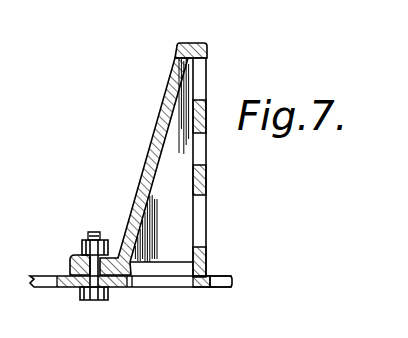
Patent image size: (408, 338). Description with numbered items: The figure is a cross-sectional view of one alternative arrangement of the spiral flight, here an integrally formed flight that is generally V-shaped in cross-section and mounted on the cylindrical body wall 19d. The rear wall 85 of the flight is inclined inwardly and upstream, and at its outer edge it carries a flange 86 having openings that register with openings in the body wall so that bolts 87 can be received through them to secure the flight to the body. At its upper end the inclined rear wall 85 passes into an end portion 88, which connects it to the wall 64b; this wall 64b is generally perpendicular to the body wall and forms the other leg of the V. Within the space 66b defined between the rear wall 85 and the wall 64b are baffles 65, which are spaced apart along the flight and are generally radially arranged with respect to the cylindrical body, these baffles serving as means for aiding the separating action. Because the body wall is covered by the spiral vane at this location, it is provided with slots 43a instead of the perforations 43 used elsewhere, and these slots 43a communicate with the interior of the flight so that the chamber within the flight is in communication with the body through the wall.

The end portion 88 is at (191, 42).
The wall 65 is at (200, 83).
The wall 64b is at (210, 111).
The rear wall 85 is at (152, 158).
The cavity 66b is at (162, 192).
The flange 86 is at (70, 258).
The bolts 87 is at (94, 272).
The base plate 19d is at (147, 283).
The slots 43a is at (193, 281).
The perforations 43 is at (220, 284).